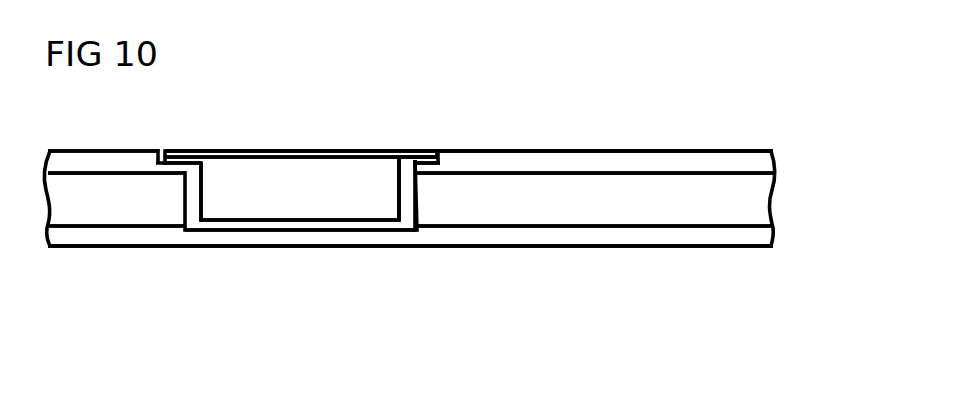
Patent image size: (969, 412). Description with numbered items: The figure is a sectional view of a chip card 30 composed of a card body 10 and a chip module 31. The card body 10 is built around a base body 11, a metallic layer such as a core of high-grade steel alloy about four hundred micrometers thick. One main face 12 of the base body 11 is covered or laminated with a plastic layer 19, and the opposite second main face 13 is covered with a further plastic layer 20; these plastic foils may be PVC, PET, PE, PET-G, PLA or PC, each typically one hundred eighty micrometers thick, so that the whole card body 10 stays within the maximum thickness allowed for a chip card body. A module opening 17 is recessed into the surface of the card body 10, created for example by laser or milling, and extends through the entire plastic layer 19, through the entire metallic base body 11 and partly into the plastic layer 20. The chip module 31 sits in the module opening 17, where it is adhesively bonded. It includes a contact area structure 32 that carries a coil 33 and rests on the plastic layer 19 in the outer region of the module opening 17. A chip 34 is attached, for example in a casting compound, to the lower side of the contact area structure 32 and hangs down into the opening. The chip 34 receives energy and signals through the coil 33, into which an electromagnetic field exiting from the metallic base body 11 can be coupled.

The card body 10 is at (706, 275).
The base body 11 is at (675, 185).
The main face 12 is at (80, 165).
The second main face 13 is at (82, 229).
The module opening 17 is at (405, 213).
The plastic layer 19 is at (595, 158).
The further plastic layer 20 is at (630, 239).
The chip card 30 is at (170, 333).
The chip module 31 is at (354, 118).
The contact area structure 32 is at (298, 148).
The coil 33 is at (417, 150).
The chip 34 is at (235, 167).